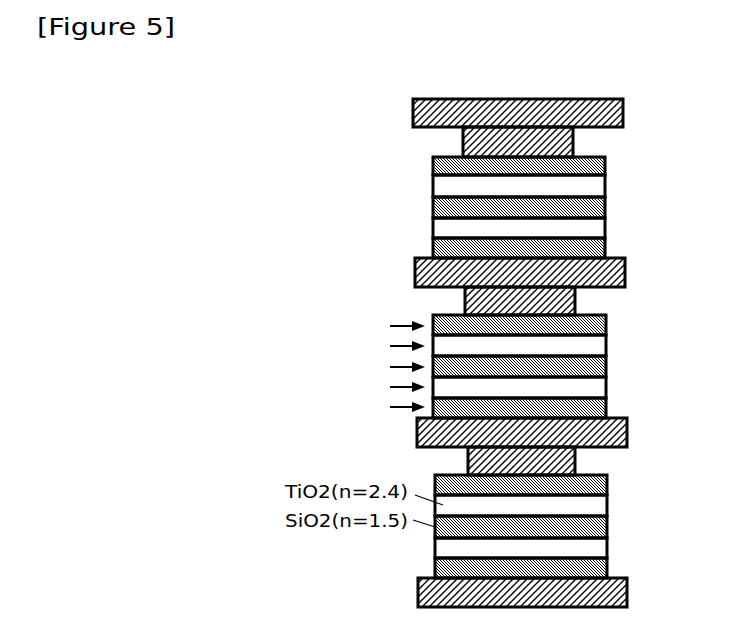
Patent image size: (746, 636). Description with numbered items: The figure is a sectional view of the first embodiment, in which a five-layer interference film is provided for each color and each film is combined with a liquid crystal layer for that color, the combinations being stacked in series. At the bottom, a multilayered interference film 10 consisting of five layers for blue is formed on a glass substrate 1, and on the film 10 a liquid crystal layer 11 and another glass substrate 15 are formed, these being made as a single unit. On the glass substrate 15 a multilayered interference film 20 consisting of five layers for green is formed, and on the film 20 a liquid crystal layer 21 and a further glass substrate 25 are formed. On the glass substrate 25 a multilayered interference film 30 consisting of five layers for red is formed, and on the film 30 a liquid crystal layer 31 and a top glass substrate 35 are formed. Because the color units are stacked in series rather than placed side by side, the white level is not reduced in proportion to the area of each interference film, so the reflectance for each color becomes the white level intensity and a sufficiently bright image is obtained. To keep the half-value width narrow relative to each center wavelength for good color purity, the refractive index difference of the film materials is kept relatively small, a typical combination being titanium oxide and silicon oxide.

The glass substrate 1 is at (627, 592).
The multilayered interference film 10 is at (621, 475).
The liquid crystal layer 11 is at (572, 462).
The glass substrate 15 is at (627, 432).
The multilayered interference film 20 is at (621, 317).
The liquid crystal layer 21 is at (563, 300).
The glass substrate 25 is at (627, 272).
The multilayered interference film 30 is at (619, 158).
The liquid crystal layer 31 is at (563, 138).
The glass substrate 35 is at (623, 113).